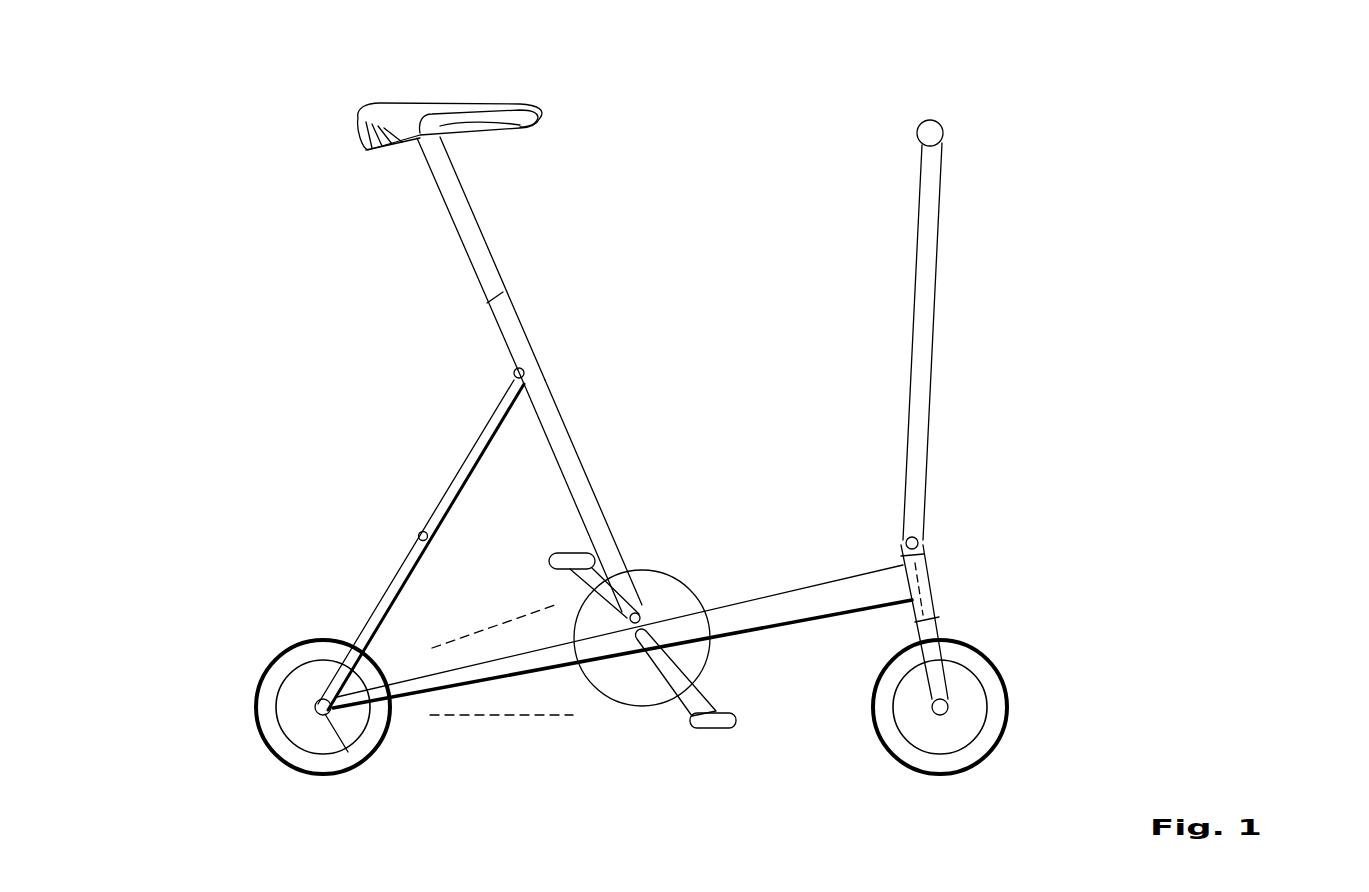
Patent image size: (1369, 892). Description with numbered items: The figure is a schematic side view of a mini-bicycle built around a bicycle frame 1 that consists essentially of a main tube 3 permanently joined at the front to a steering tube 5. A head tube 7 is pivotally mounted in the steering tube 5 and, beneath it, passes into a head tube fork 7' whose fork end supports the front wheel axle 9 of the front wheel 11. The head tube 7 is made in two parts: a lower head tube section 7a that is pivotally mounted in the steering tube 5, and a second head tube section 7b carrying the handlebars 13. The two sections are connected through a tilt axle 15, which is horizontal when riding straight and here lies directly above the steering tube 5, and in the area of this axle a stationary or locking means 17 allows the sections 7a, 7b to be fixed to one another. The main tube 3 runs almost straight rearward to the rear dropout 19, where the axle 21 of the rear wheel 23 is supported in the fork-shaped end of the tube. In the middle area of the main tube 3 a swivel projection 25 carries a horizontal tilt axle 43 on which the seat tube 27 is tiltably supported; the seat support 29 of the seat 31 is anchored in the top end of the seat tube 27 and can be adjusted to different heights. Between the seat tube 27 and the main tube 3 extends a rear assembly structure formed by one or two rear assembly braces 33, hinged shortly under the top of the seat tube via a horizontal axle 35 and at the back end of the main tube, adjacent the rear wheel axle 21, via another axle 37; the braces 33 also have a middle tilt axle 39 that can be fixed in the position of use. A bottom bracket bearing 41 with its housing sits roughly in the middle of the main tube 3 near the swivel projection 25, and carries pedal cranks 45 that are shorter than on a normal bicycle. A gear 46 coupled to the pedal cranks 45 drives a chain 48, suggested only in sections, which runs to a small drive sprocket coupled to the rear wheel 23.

The bicycle frame 1 is at (802, 544).
The main tube 3 is at (791, 616).
The steering tube 5 is at (940, 578).
The head tube 7 is at (977, 421).
The head tube section 7a is at (932, 547).
The second head tube section 7b is at (925, 355).
The head tube fork 7' is at (978, 596).
The front wheel axle 9 is at (948, 706).
The front wheel 11 is at (995, 727).
The handlebars 13 is at (940, 130).
The tilt axle 15 is at (917, 538).
The locking means 17 is at (886, 545).
The rear dropout 19 is at (314, 600).
The rear wheel axle 21 is at (318, 708).
The rear wheel 23 is at (278, 668).
The swivel projection 25 is at (655, 610).
The seat tube 27 is at (573, 466).
The seat support 29 is at (470, 228).
The seat 31 is at (528, 108).
The rear assembly brace 33 is at (411, 484).
The horizontal axle 35 is at (524, 370).
The axle 37 is at (337, 698).
The middle tilt axle 39 is at (428, 538).
The bottom bracket bearing 41 is at (634, 660).
The tilt axle 43 is at (638, 612).
The pedal cranks 45 is at (670, 673).
The gear 46 is at (694, 585).
The chain 48 is at (436, 646).